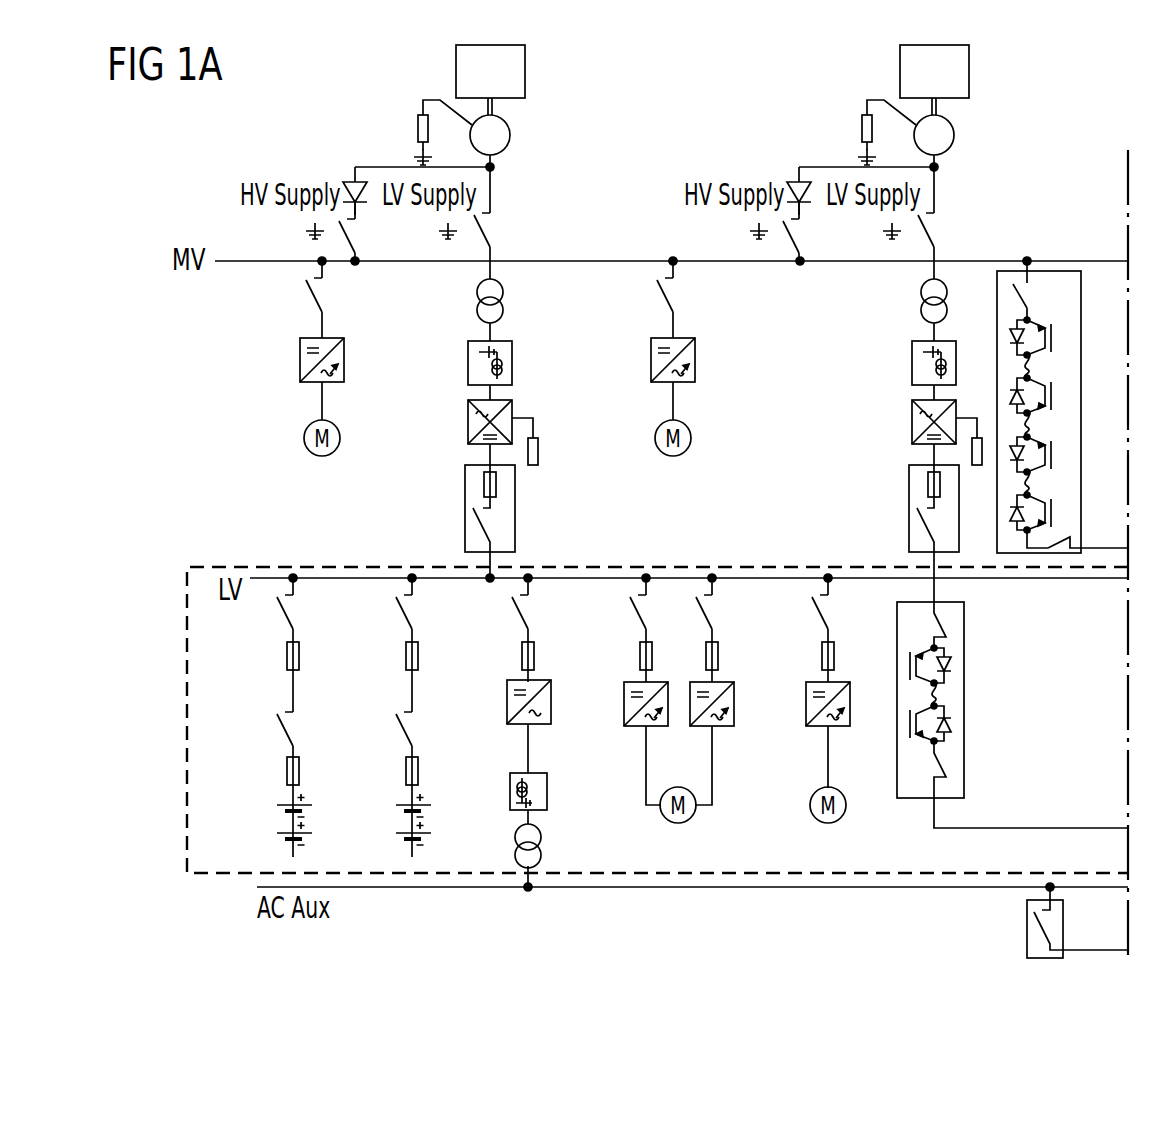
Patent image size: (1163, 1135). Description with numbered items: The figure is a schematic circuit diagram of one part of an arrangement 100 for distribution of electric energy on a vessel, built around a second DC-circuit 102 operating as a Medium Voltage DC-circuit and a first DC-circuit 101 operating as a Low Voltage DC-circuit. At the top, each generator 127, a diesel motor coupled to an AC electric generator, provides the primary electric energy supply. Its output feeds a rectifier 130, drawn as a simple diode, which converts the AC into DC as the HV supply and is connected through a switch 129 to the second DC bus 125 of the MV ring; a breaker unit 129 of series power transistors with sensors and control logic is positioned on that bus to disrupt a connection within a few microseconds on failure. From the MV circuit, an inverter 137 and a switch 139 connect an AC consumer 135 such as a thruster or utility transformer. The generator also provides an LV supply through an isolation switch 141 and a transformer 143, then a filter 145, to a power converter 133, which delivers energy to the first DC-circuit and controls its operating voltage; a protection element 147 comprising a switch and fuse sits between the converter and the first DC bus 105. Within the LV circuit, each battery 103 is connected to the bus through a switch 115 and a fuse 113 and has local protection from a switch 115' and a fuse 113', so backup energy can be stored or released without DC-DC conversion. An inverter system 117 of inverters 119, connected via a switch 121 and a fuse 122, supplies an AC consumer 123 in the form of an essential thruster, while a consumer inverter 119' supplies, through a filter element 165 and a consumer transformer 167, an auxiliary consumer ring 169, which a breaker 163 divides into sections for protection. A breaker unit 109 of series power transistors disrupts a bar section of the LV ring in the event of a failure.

The arrangement for distribution of electric energy 100 is at (1062, 125).
The first DC-circuit 101 is at (187, 712).
The second DC-circuit 102 is at (160, 182).
The battery 103 is at (312, 838).
The first DC bus 105 is at (755, 577).
The breaker unit 109 is at (965, 708).
The fuse 113 is at (312, 668).
The fuse 113' is at (312, 775).
The switch 115 is at (309, 612).
The switch 115' is at (307, 726).
The inverter system 117 is at (502, 678).
The inverter 119 is at (751, 743).
The consumer inverter 119' is at (567, 755).
The switch 121 is at (629, 617).
The fuse 122 is at (639, 655).
The AC consumer 123 is at (810, 805).
The second DC bus 125 is at (607, 260).
The generator 127 is at (532, 45).
The switch / breaker unit 129 is at (359, 232).
The rectifier 130 is at (349, 181).
The power converter 133 is at (467, 420).
The AC consumer 135 is at (304, 440).
The inverter 137 is at (300, 360).
The switch 139 is at (305, 298).
The isolation switch 141 is at (493, 233).
The transformer 143 is at (477, 298).
The filter 145 is at (467, 364).
The protection element 147 is at (465, 508).
The breaker 163 is at (1026, 930).
The filter element 165 is at (548, 797).
The consumer transformer 167 is at (541, 851).
The auxiliary consumer ring 169 is at (884, 888).